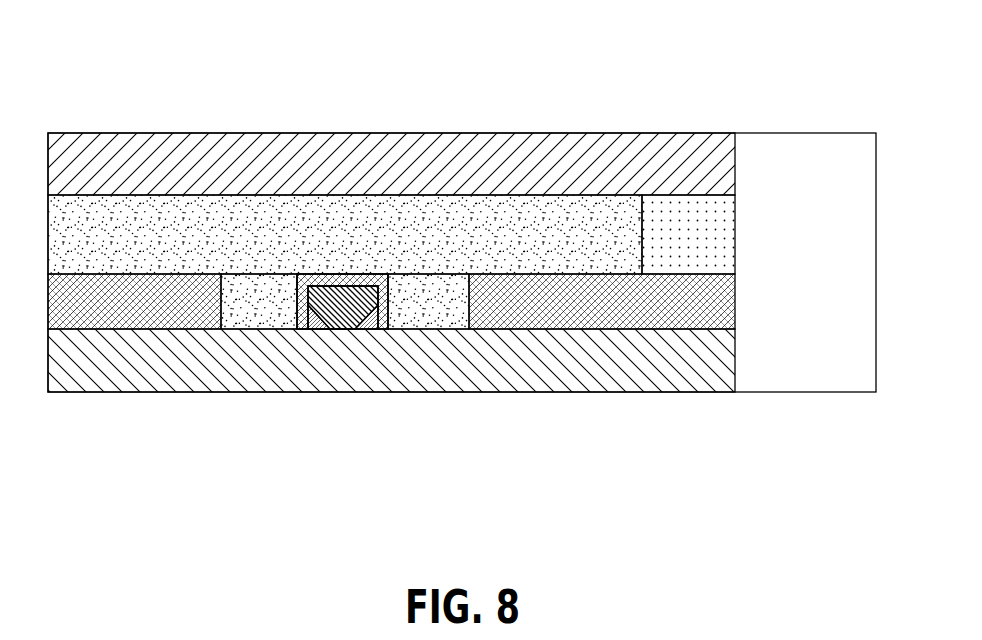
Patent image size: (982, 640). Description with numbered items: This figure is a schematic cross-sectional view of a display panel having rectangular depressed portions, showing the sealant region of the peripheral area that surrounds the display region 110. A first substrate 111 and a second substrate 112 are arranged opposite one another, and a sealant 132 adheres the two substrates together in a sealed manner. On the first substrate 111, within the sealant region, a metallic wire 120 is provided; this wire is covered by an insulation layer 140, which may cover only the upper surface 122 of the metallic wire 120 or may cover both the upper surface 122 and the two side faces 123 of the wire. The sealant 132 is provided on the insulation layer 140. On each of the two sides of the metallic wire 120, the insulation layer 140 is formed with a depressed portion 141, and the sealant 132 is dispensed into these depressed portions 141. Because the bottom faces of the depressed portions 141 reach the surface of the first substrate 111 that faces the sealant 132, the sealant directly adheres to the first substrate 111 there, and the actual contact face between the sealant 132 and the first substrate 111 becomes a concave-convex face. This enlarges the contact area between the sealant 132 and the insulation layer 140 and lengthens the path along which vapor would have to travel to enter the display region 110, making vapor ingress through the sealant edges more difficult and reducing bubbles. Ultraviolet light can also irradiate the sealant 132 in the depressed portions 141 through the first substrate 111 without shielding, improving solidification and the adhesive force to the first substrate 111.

The display region 110 is at (812, 332).
The first substrate 111 is at (552, 367).
The second substrate 112 is at (148, 172).
The metallic wire 120 is at (365, 271).
The upper surface 122 is at (357, 283).
The side faces 123 is at (310, 300).
The sealant 132 is at (302, 258).
The insulation layer 140 is at (198, 300).
The depressed portions 141 is at (267, 317).